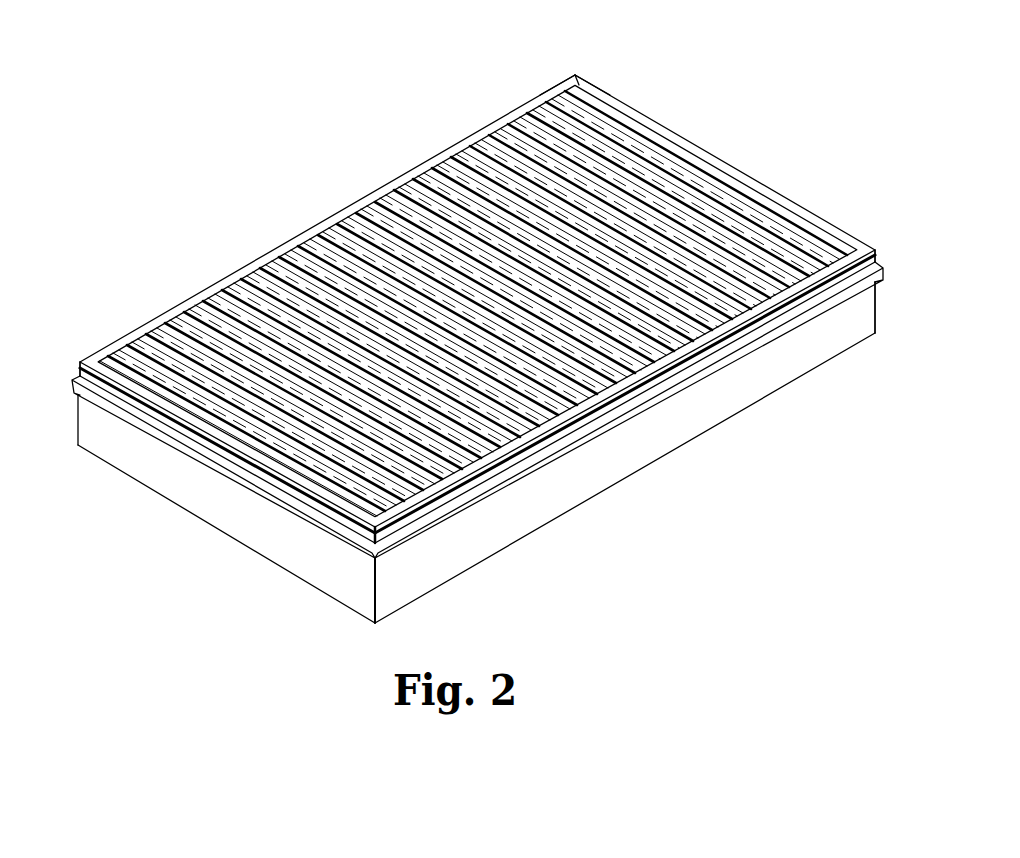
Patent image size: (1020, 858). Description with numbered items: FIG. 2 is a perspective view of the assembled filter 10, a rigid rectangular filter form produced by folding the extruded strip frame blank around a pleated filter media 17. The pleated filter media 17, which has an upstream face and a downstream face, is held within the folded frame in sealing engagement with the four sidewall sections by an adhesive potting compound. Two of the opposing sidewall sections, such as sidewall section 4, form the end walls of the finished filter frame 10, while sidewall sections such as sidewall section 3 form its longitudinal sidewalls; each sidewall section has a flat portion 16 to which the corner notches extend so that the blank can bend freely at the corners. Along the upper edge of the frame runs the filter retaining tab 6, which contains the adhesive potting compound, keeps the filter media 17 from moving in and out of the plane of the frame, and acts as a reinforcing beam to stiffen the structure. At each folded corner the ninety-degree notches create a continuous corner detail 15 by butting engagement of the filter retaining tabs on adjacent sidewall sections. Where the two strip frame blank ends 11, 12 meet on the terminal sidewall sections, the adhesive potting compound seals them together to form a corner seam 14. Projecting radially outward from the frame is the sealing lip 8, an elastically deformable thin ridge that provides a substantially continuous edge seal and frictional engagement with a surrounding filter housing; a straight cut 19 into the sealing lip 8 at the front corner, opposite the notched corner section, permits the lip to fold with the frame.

The assembled filter 10 is at (482, 317).
The filter retaining tab 6 is at (645, 117).
The pleated filter media 17 is at (688, 177).
The sealing lip 8 is at (880, 272).
The flat portion 16 is at (640, 440).
The sidewall section 4 is at (297, 557).
The sidewall section 3 is at (862, 322).
The cut 19 is at (383, 563).
The corner detail 15 is at (872, 250).
The corner seam 14 is at (576, 74).
The strip frame blank end 11 is at (573, 74).
The strip frame blank end 12 is at (580, 76).